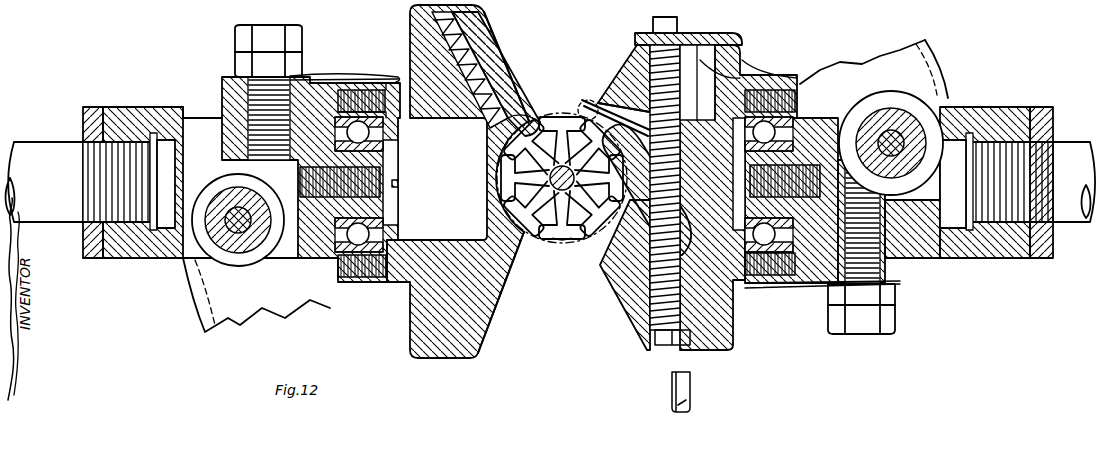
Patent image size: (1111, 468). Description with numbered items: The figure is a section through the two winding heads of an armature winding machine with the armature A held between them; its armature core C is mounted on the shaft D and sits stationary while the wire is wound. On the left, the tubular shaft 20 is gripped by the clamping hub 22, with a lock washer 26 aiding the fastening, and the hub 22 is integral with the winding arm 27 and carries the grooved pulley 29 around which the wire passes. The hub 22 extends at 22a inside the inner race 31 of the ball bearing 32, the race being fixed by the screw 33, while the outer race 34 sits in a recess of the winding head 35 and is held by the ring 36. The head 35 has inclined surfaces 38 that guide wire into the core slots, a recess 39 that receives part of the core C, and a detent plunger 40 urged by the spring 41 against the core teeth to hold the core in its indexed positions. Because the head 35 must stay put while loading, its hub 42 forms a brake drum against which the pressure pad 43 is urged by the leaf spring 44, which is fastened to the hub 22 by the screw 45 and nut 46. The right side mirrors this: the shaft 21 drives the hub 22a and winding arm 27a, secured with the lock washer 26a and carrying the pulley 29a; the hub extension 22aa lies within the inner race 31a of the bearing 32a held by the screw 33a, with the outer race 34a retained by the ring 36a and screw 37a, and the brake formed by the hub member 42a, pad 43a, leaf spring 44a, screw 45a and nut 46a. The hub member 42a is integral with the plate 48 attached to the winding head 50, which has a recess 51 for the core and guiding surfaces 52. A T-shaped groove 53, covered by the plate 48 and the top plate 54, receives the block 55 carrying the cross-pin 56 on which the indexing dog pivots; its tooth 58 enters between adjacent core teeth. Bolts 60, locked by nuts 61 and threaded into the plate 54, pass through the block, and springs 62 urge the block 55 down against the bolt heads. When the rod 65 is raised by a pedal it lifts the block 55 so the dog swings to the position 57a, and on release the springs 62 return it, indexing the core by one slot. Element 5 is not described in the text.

The tubular shaft 20 is at (22, 142).
The shaft 21 is at (1072, 142).
The clamping hub 22 is at (142, 107).
The hub 22a is at (1008, 107).
The hub extension 22aa is at (890, 134).
The lock washer 26 is at (92, 107).
The lock washer 26a is at (1042, 107).
The winding arm 27 is at (188, 308).
The winding arm 27a is at (938, 40).
The grooved pulley 29 is at (210, 180).
The grooved pulley 29a is at (905, 100).
The inner race 31 is at (378, 207).
The inner race 31a is at (820, 184).
The ball bearing 32 is at (370, 234).
The ball bearing 32a is at (776, 130).
The screw 33 is at (392, 163).
The screw 33a is at (739, 174).
The outer race 34 is at (370, 132).
The outer race 34a is at (776, 238).
The winding head 35 is at (452, 388).
The ring 36 is at (348, 283).
The ring 36a is at (788, 90).
The screw 37a is at (850, 104).
The inclined surfaces 38 is at (496, 40).
The recess 39 is at (500, 180).
The detent plunger 40 is at (520, 128).
The spring 41 is at (460, 95).
The hub 42 is at (386, 280).
The hub member 42a is at (755, 90).
The pressure pad 43 is at (376, 78).
The pressure pad 43a is at (778, 288).
The leaf spring 44 is at (290, 80).
The leaf spring 44a is at (900, 284).
The screw 45 is at (240, 26).
The screw 45a is at (897, 320).
The nut 46 is at (238, 62).
The nut 46a is at (897, 296).
The plate 48 is at (750, 62).
The winding head 50 is at (655, 345).
The recess 51 is at (612, 128).
The surfaces 52 is at (620, 70).
The T-shaped groove 53 is at (700, 45).
The top plate 54 is at (642, 32).
The block 55 is at (698, 120).
The cross-pin 56 is at (640, 245).
The indexing dog position 57a is at (585, 104).
The tooth 58 is at (574, 178).
The bolt 60 is at (700, 68).
The nut 61 is at (672, 30).
The spring 62 is at (718, 70).
The rod 65 is at (692, 386).
The wheel tooth 5 is at (543, 240).
The armature A is at (572, 244).
The armature core C is at (556, 246).
The armature shaft D is at (550, 175).